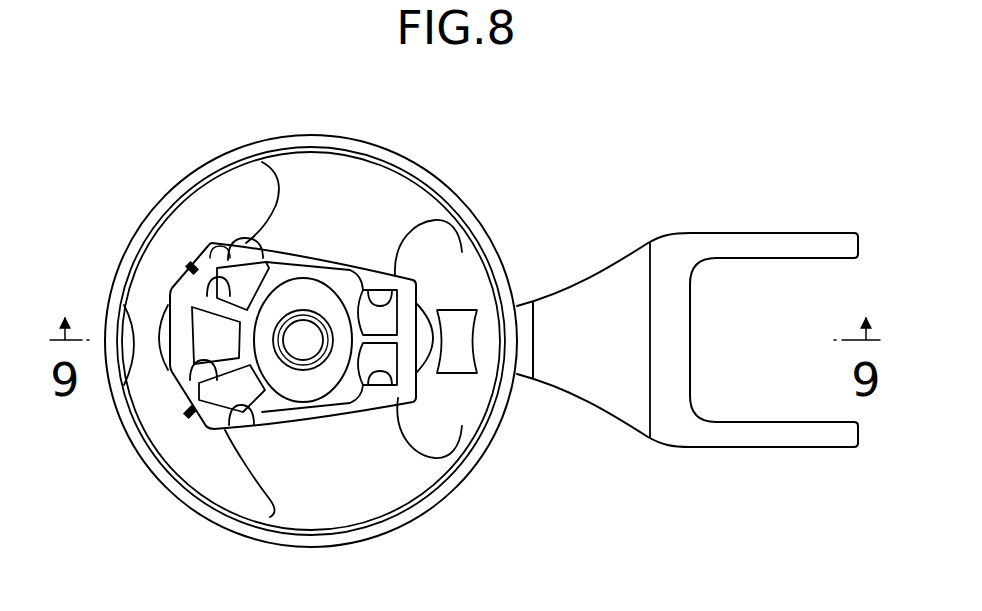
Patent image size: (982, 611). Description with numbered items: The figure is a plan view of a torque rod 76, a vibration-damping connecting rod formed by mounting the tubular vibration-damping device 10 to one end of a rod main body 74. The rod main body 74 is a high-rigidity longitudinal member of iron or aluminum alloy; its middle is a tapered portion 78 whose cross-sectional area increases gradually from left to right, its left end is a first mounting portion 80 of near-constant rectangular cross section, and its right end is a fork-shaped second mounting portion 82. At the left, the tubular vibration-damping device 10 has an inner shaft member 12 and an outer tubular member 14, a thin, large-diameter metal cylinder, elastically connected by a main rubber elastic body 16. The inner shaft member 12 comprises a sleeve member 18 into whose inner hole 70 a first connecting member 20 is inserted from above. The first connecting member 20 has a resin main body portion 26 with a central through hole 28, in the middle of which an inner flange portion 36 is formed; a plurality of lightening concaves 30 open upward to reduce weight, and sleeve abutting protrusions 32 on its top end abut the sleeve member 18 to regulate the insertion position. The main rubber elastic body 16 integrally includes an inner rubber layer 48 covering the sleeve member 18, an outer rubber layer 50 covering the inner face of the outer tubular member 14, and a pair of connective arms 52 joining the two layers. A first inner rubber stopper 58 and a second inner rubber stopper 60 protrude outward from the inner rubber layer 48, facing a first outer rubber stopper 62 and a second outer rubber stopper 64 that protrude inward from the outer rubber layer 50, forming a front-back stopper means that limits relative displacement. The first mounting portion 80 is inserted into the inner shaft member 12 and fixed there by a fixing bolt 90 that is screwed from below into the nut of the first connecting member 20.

The tubular vibration-damping device 10 is at (496, 190).
The inner shaft member 12 is at (186, 260).
The outer tubular member 14 is at (176, 499).
The main rubber elastic body 16 is at (240, 208).
The sleeve member 18 is at (203, 414).
The first connecting member 20 is at (244, 437).
The main body portion 26 is at (378, 398).
The through hole 28 is at (304, 353).
The lightening concaves 30 is at (400, 290).
The sleeve abutting protrusion 32 is at (327, 267).
The inner flange portion 36 is at (304, 384).
The inner rubber layer 48 is at (253, 252).
The outer rubber layer 50 is at (470, 444).
The connective arms 52 is at (311, 188).
The first inner rubber stopper 58 is at (168, 322).
The second inner rubber stopper 60 is at (428, 302).
The first outer rubber stopper 62 is at (131, 323).
The second outer rubber stopper 64 is at (486, 350).
The inner hole 70 is at (225, 250).
The rod main body 74 is at (600, 443).
The torque rod 76 is at (687, 296).
The tapered portion 78 is at (591, 274).
The first mounting portion 80 is at (461, 381).
The second mounting portion 82 is at (781, 230).
The fixing bolt 90 is at (305, 330).